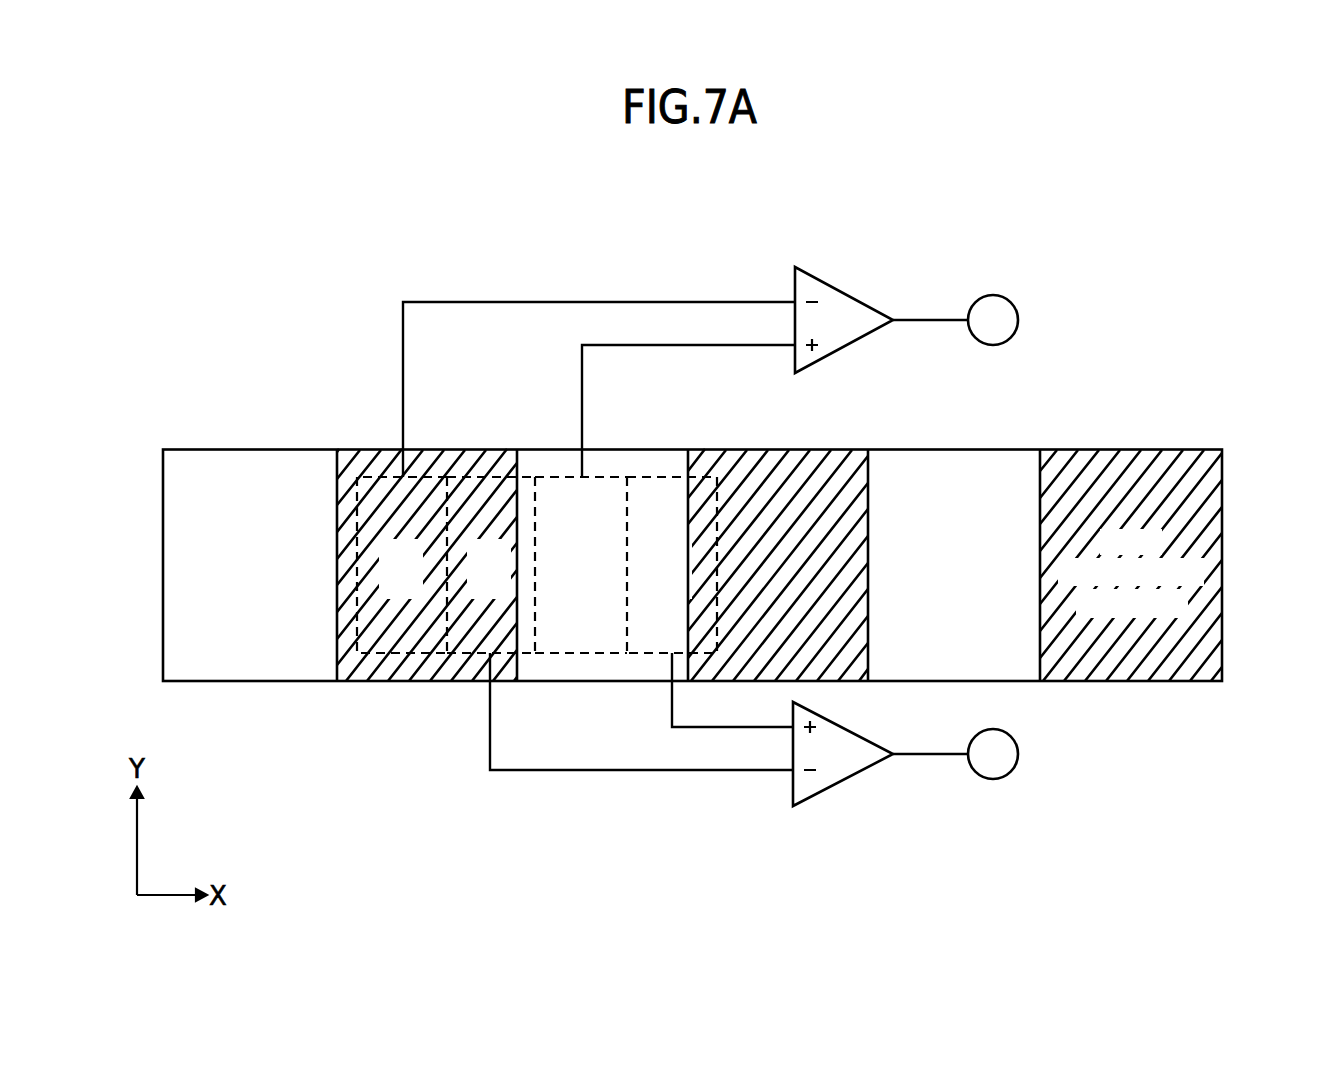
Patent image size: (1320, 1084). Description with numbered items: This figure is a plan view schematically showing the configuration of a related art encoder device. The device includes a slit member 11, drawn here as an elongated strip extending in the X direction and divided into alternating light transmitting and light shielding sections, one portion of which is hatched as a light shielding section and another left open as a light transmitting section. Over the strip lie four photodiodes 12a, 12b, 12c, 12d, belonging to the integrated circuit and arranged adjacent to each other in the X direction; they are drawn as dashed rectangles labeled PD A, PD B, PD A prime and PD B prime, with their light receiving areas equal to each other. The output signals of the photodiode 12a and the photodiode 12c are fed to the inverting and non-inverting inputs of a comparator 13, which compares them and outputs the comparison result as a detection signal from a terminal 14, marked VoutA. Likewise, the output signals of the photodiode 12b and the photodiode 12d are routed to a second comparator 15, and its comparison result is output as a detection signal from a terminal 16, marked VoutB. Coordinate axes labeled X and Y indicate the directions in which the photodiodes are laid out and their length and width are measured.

The slit member 11 is at (1222, 522).
The photodiode 12a is at (363, 473).
The photodiode 12b is at (455, 473).
The photodiode 12c is at (552, 473).
The photodiode 12d is at (643, 473).
The comparator 13 is at (795, 280).
The terminal 14 is at (995, 295).
The comparator 15 is at (793, 794).
The terminal 16 is at (993, 780).